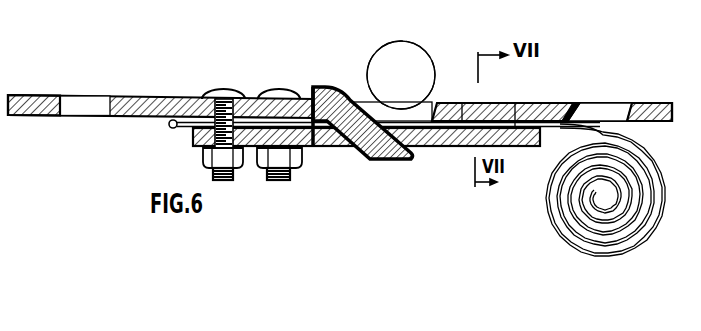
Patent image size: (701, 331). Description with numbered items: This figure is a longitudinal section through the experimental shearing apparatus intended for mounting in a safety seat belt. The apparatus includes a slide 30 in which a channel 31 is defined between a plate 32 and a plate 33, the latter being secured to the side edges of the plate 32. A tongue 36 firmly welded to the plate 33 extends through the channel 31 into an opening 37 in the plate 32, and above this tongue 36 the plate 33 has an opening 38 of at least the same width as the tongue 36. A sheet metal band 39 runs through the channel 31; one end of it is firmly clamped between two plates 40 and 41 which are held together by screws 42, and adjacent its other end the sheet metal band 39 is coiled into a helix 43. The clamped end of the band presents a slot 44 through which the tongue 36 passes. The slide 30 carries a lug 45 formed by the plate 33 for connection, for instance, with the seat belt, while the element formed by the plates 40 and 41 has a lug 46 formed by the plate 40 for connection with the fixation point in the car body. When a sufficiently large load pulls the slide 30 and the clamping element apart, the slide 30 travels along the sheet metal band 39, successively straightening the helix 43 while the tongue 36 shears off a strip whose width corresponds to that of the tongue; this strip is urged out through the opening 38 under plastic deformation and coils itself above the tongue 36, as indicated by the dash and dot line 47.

The slide 30 is at (547, 103).
The channel 31 is at (463, 103).
The plate 32 is at (515, 150).
The plate 33 is at (572, 108).
The tongue 36 is at (393, 161).
The opening 37 is at (403, 133).
The opening 38 is at (388, 102).
The sheet metal band 39 is at (515, 103).
The plate 40 is at (155, 98).
The plate 41 is at (190, 143).
The screws 42 is at (268, 93).
The helix 43 is at (540, 205).
The slot 44 is at (306, 98).
The lug 45 is at (658, 108).
The lug 46 is at (35, 96).
The dash and dot line 47 is at (390, 42).